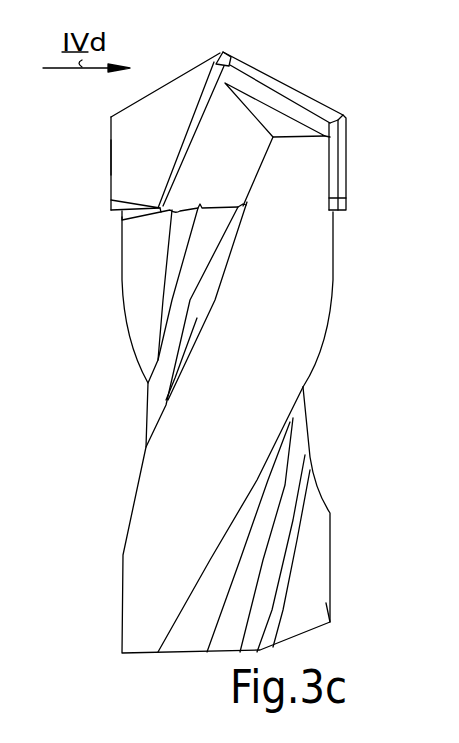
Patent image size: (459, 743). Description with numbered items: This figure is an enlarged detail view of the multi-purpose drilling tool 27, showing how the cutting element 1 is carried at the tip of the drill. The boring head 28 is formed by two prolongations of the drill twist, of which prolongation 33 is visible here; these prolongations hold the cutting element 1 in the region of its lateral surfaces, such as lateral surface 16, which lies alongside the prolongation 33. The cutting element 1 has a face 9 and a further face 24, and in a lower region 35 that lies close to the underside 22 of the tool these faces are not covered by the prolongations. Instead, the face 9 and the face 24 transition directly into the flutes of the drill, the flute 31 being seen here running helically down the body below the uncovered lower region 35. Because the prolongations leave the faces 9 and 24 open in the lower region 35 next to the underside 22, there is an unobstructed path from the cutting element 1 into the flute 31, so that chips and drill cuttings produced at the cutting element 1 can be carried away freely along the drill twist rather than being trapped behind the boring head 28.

The cutting element 1 is at (178, 107).
The face 9 is at (132, 135).
The lower region 35 is at (135, 162).
The underside 22 is at (115, 215).
The flute 31 is at (142, 270).
The face 24 is at (290, 82).
The multi-purpose drilling tool 27 is at (307, 80).
The boring head 28 is at (323, 88).
The prolongation 33 is at (307, 158).
The lateral surface 16 is at (335, 173).